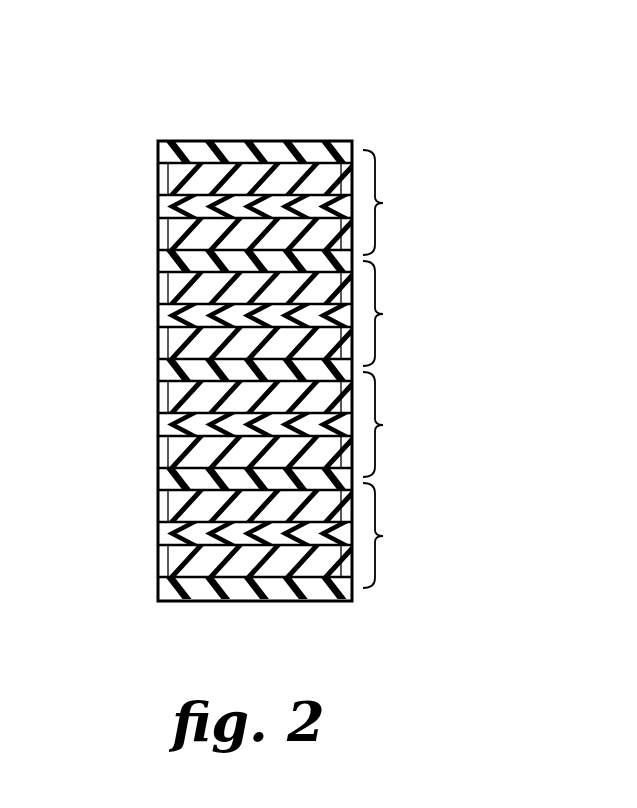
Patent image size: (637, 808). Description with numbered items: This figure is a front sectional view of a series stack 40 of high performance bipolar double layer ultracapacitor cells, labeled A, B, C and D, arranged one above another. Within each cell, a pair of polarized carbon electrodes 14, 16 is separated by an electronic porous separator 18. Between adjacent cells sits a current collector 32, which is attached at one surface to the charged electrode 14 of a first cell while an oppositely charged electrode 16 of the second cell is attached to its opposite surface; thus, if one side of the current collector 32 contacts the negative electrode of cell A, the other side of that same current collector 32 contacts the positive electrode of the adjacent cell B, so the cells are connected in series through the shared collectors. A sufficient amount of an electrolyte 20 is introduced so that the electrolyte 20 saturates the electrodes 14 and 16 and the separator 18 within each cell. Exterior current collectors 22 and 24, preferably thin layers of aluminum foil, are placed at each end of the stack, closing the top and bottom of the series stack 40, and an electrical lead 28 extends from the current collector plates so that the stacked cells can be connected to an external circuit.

The series stack 40 is at (128, 110).
The electrode 14 is at (229, 165).
The electrode 16 is at (176, 232).
The separator 18 is at (176, 205).
The current collector plate 22 is at (302, 150).
The current collector plate 24 is at (231, 583).
The current collector 32 is at (182, 262).
The electrical lead 28 is at (344, 180).
The electrolyte 20 is at (344, 402).